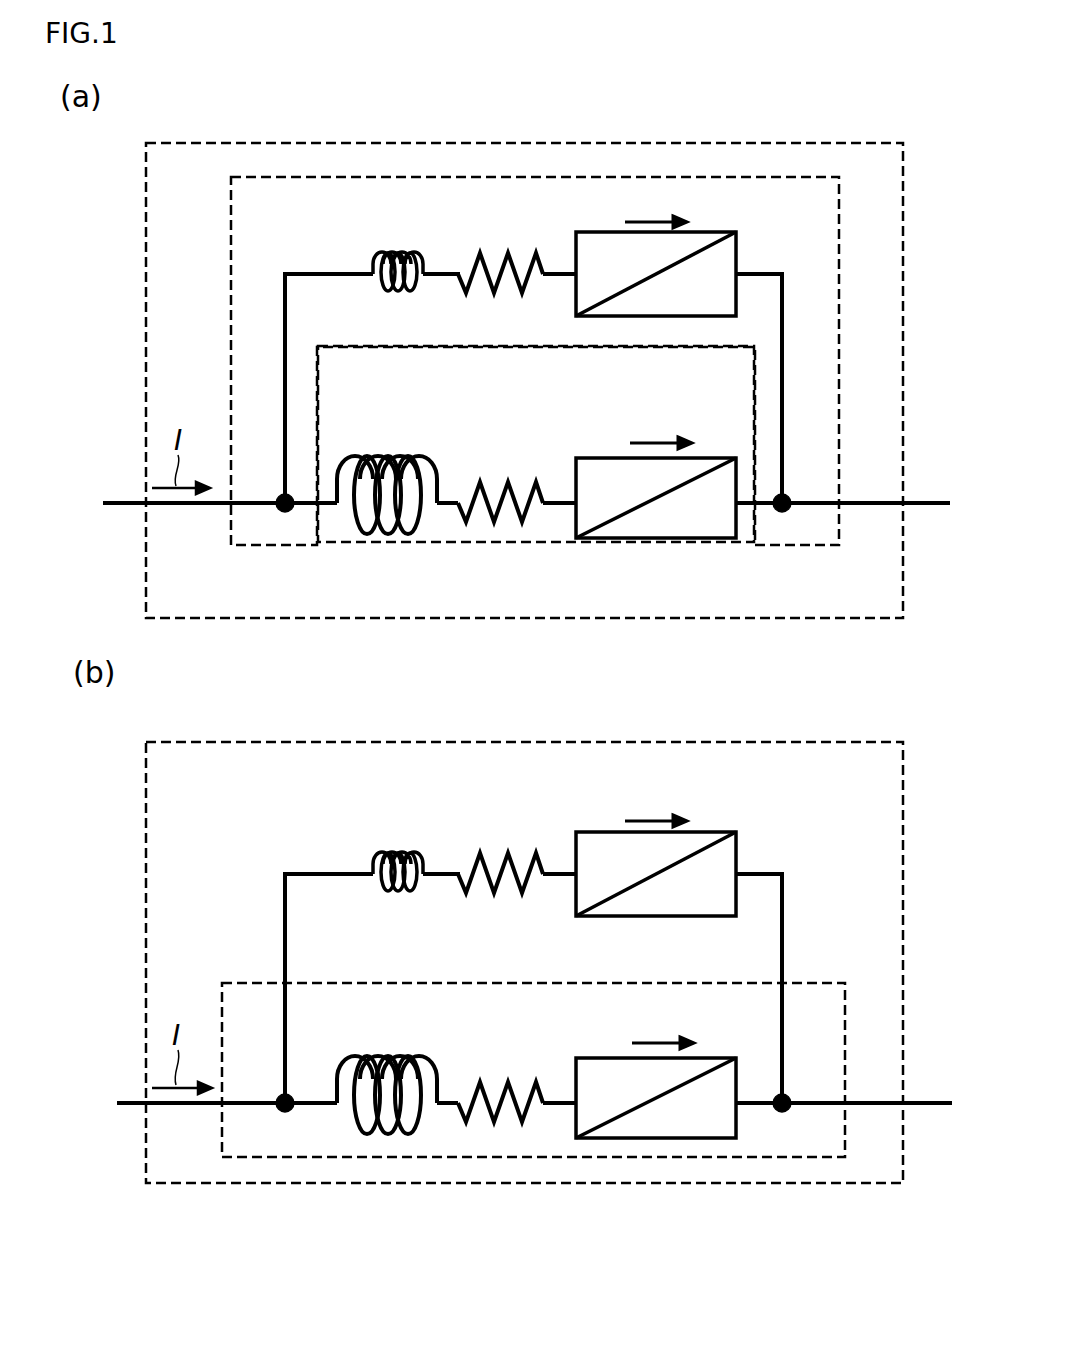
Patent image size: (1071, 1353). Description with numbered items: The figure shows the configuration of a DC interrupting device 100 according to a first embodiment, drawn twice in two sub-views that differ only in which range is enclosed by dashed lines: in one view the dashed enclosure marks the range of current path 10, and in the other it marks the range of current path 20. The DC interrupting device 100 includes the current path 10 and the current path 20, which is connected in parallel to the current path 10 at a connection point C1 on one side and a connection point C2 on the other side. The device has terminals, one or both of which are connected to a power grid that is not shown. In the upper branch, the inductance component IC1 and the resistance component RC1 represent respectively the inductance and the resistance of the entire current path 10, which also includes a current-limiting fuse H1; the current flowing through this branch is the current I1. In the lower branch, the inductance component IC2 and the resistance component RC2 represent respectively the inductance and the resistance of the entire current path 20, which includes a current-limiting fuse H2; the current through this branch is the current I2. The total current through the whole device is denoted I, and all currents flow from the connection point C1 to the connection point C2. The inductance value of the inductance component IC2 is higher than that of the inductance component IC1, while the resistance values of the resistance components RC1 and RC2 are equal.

The DC interrupting device 100 is at (268, 141).
The current path 10 is at (230, 292).
The current path 20 is at (509, 545).
The inductance component IC1 is at (396, 253).
The inductance component IC2 is at (373, 455).
The resistance component RC1 is at (483, 252).
The resistance component RC2 is at (508, 478).
The current-limiting fuse H1 is at (602, 231).
The current-limiting fuse H2 is at (607, 457).
The connection point C1 is at (280, 494).
The connection point C2 is at (786, 495).
The current I1 is at (658, 217).
The current I2 is at (660, 441).